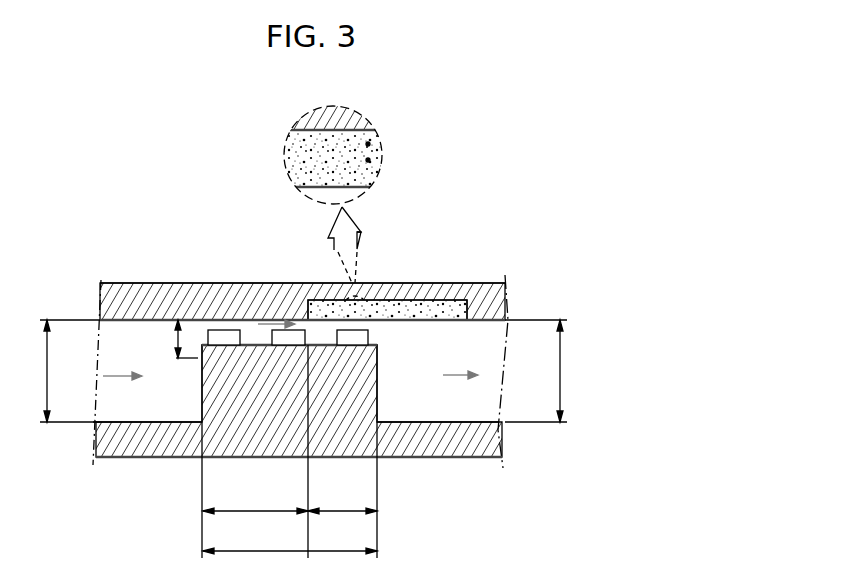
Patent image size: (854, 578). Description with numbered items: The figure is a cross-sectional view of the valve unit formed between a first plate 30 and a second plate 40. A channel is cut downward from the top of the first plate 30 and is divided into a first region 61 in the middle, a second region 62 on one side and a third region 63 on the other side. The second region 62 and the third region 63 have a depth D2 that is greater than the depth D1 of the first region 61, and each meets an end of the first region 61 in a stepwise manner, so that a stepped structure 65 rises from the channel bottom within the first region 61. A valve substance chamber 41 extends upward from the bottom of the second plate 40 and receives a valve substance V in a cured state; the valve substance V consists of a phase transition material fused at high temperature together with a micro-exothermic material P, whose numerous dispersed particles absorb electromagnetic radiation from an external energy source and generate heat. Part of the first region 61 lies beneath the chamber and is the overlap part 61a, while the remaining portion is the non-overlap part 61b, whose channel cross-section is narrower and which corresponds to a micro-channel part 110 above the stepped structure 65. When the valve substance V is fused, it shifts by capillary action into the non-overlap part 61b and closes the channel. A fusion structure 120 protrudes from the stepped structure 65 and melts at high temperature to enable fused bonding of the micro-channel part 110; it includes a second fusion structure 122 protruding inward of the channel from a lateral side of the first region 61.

The first plate 30 is at (97, 439).
The second plate 40 is at (484, 287).
The valve substance chamber 41 is at (446, 302).
The first region 61 is at (290, 538).
The overlap part 61a is at (342, 497).
The non-overlap part 61b is at (255, 451).
The second region 62 is at (182, 421).
The third region 63 is at (443, 421).
The stepped structure 65 is at (378, 383).
The micro-channel part 110 is at (250, 337).
The fusion structure 120 is at (208, 318).
The second fusion structure 122 is at (360, 339).
The depth of the first region D1 is at (175, 339).
The depth of the second and third regions D2 is at (292, 371).
The micro-exothermic material P is at (370, 145).
The valve substance V is at (370, 160).